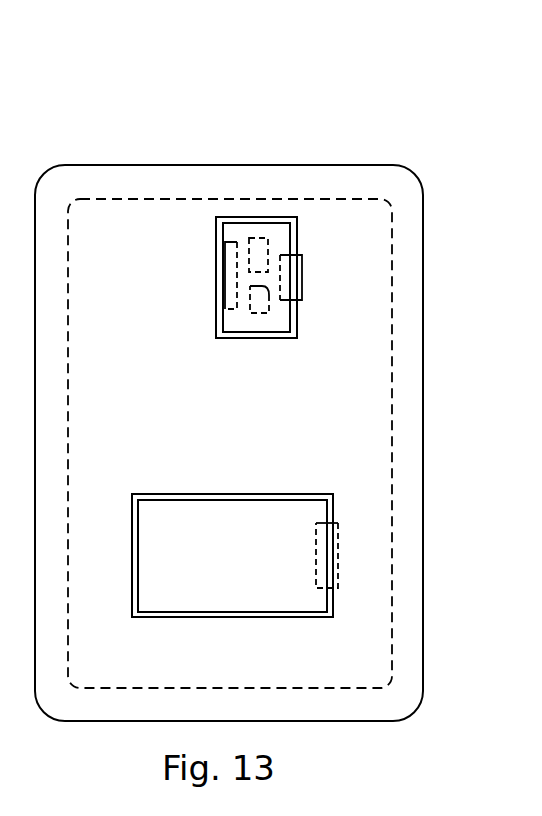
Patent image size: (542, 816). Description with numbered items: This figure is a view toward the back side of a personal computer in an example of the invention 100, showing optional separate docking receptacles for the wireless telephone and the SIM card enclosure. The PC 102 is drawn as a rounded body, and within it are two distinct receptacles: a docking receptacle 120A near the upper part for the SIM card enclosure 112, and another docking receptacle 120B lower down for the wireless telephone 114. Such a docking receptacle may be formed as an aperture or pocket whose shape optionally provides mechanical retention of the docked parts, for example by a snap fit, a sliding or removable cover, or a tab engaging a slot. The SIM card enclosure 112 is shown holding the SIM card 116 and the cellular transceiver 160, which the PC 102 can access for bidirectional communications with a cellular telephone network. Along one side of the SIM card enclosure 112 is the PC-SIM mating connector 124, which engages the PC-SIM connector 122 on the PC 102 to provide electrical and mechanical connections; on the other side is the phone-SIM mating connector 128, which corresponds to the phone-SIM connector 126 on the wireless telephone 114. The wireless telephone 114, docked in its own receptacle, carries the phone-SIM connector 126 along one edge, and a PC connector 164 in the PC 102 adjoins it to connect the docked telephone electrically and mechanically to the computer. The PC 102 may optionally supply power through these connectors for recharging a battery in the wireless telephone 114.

The invention 100 is at (265, 88).
The PC 102 is at (423, 224).
The SIM card enclosure 112 is at (282, 338).
The wireless telephone 114 is at (160, 500).
The SIM card 116 is at (261, 314).
The docking receptacle 120A is at (216, 326).
The docking receptacle 120B is at (192, 620).
The PC-SIM connector 122 is at (303, 255).
The PC-SIM mating connector 124 is at (288, 255).
The phone-SIM connector 126 is at (318, 590).
The phone-SIM mating connector 128 is at (228, 242).
The cellular transceiver 160 is at (267, 238).
The PC connector 164 is at (338, 564).